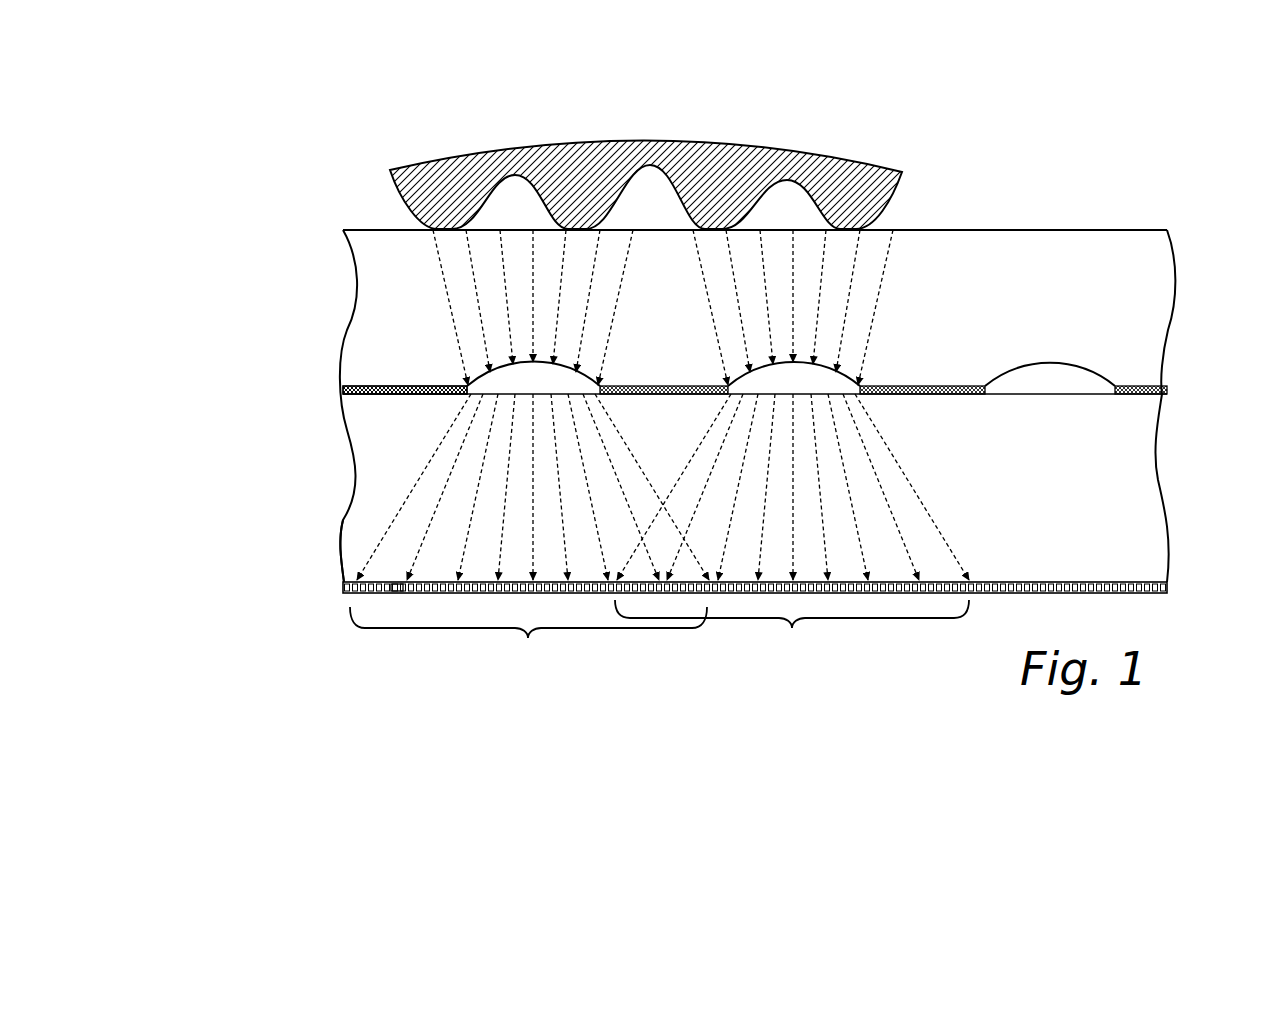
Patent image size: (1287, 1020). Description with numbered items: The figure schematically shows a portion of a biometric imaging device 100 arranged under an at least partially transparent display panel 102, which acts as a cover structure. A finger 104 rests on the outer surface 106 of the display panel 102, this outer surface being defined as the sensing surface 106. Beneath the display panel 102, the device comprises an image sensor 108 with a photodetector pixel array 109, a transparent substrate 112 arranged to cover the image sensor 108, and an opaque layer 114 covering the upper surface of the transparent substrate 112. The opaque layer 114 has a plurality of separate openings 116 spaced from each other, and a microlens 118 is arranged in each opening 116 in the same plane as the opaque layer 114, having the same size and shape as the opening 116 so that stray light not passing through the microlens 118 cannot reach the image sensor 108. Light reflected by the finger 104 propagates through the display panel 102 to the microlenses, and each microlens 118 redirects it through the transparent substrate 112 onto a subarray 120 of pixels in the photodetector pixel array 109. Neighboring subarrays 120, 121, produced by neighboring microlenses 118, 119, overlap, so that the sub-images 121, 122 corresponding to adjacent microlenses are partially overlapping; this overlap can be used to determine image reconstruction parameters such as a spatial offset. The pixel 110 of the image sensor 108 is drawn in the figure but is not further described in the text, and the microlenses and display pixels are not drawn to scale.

The biometric imaging device 100 is at (253, 118).
The display panel 102 is at (372, 283).
The finger 104 is at (712, 165).
The sensing surface 106 is at (948, 229).
The image sensor 108 is at (343, 584).
The photodetector pixel array 109 is at (383, 580).
The photodetector pixel 110 is at (397, 593).
The transparent substrate 112 is at (1122, 495).
The opaque layer 114 is at (422, 385).
The opening 116 is at (1073, 395).
The microlens 118 is at (843, 378).
The neighboring microlens 119 is at (572, 378).
The subarray of pixels 120 is at (792, 629).
The neighboring subarray 121 is at (528, 640).
The sub-image 122 is at (367, 362).